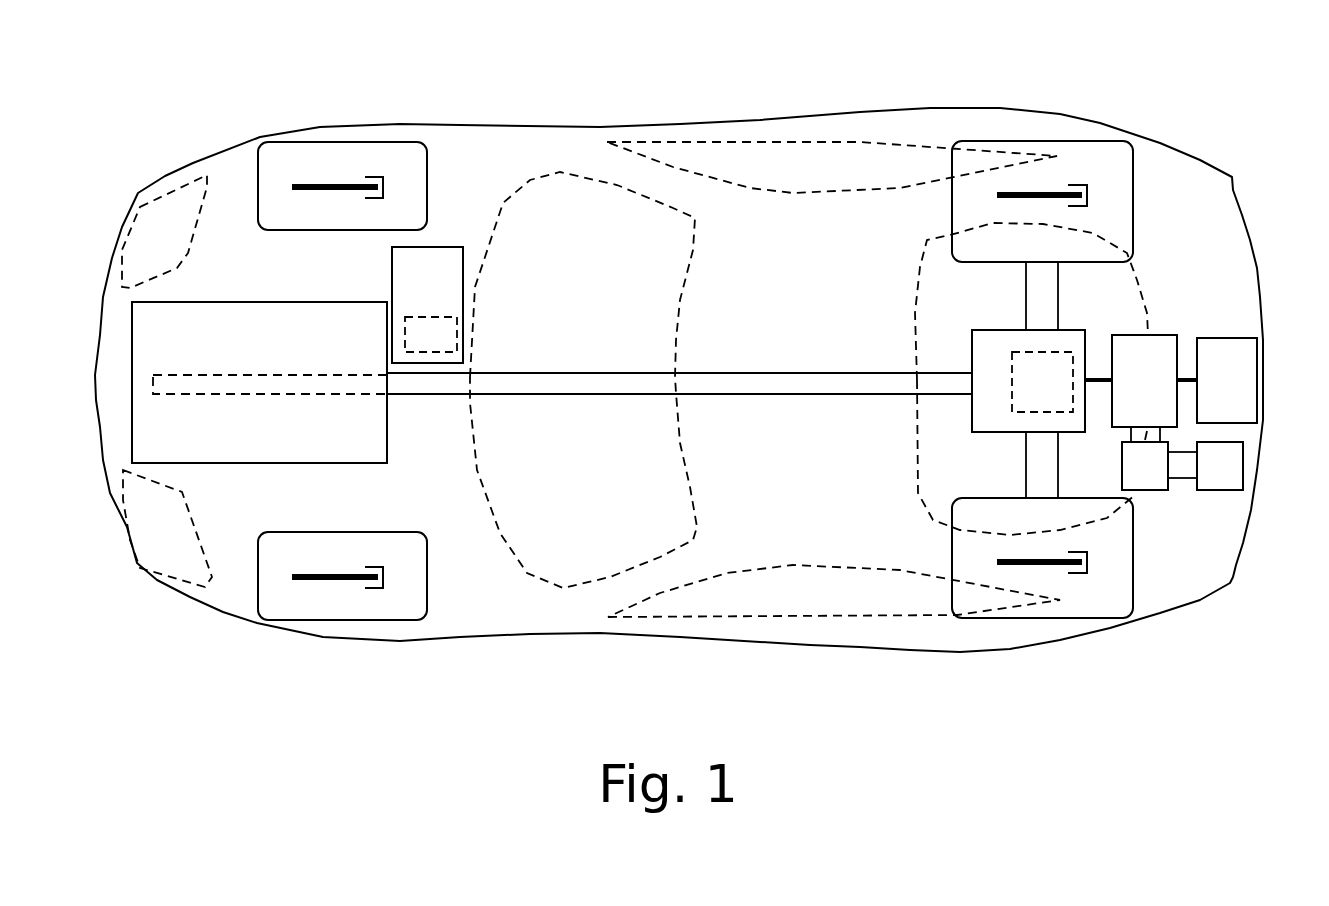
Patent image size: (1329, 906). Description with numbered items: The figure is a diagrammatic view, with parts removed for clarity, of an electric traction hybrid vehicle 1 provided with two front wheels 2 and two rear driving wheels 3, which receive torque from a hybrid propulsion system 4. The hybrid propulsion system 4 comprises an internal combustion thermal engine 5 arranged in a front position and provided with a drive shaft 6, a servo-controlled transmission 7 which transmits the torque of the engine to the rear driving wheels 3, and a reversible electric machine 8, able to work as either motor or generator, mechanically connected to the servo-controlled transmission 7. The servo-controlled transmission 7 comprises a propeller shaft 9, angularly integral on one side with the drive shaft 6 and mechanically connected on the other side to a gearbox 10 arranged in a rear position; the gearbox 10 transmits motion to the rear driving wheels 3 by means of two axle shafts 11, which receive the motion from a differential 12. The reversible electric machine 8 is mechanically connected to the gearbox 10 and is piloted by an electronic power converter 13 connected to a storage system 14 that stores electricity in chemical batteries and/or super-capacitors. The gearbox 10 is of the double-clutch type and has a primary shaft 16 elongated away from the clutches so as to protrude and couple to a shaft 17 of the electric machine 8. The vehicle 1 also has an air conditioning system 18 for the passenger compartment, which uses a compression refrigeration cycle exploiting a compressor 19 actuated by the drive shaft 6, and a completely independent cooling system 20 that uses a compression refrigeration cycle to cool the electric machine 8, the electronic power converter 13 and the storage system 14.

The electric traction hybrid vehicle 1 is at (1212, 675).
The front wheels 2 is at (278, 160).
The rear driving wheels 3 is at (1117, 155).
The hybrid propulsion system 4 is at (171, 143).
The internal combustion thermal engine 5 is at (140, 327).
The drive shaft 6 is at (247, 382).
The servo-controlled transmission 7 is at (711, 97).
The reversible electric machine 8 is at (1144, 388).
The propeller shaft 9 is at (728, 377).
The gearbox 10 is at (985, 418).
The axle shafts 11 is at (1038, 288).
The differential 12 is at (1042, 382).
The electronic power converter 13 is at (1159, 466).
The storage system 14 is at (1220, 466).
The primary shaft 16 is at (1100, 373).
The shaft of the electric machine 17 is at (1190, 375).
The air conditioning system 18 is at (427, 305).
The compressor 19 is at (431, 334).
The cooling system 20 is at (1227, 380).